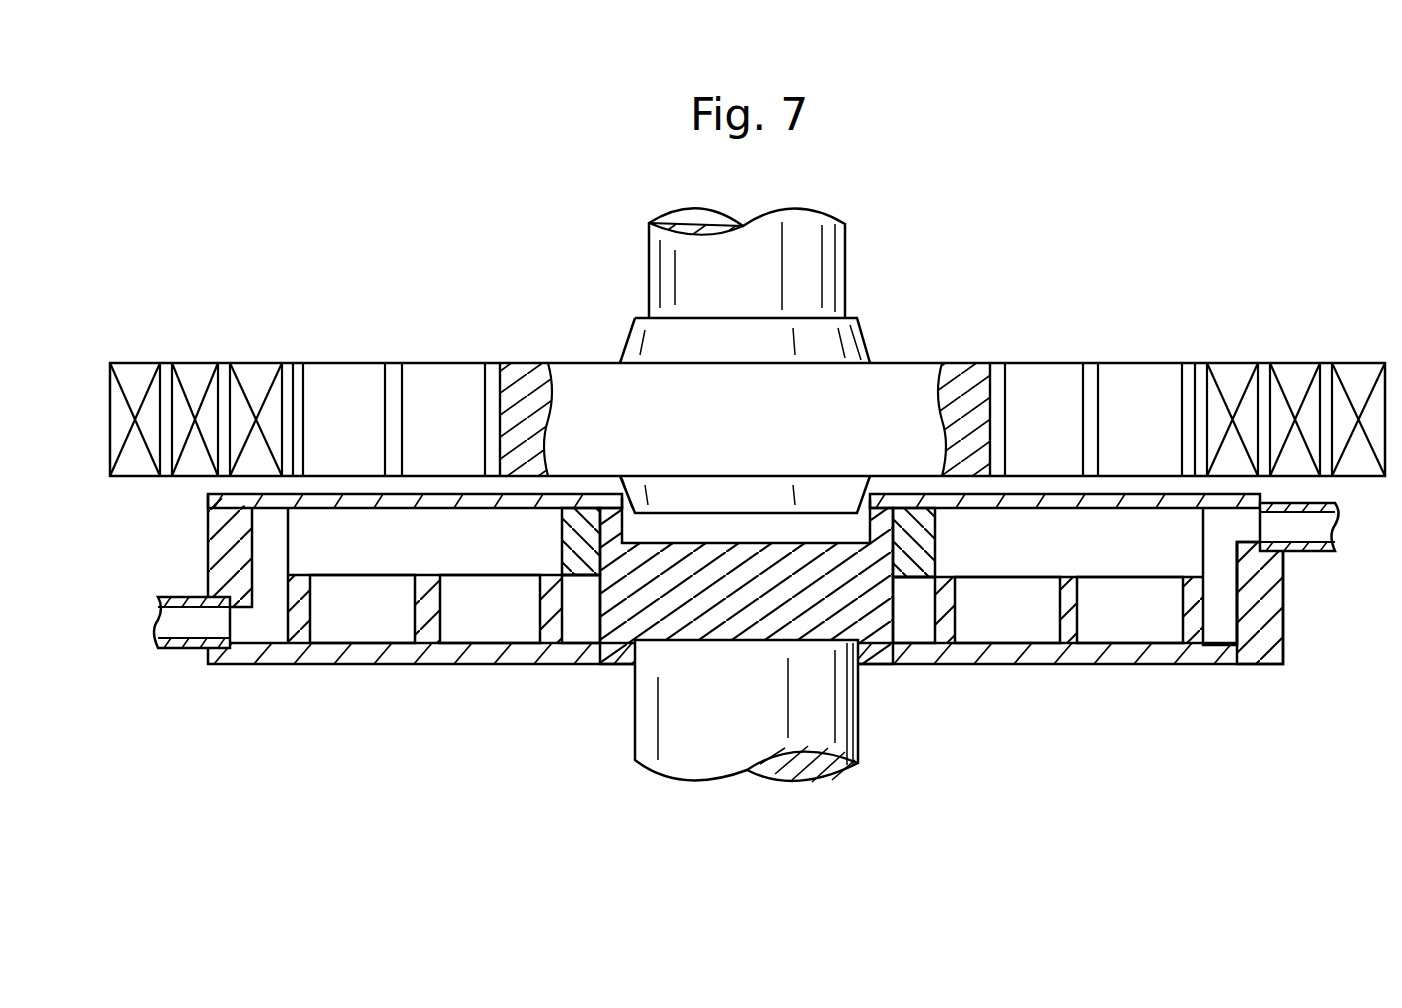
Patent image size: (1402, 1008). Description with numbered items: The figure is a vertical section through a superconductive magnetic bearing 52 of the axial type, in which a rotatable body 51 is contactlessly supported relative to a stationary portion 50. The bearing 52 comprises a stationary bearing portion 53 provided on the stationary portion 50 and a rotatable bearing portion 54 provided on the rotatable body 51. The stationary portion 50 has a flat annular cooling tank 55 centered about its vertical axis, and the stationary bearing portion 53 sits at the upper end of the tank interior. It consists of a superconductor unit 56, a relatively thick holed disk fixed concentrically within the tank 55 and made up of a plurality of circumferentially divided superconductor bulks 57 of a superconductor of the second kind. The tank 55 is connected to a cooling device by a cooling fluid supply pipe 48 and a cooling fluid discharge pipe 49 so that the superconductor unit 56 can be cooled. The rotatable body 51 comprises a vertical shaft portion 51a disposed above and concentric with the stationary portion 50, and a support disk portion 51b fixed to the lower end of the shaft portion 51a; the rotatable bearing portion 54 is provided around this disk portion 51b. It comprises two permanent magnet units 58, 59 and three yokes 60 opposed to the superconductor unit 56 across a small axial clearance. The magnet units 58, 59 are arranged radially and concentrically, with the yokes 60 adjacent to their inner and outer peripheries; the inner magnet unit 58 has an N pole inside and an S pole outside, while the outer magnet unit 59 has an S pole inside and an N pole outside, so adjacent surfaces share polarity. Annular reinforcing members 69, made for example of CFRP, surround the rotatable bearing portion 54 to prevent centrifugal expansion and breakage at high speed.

The cooling fluid supply pipe 48 is at (1300, 552).
The cooling fluid discharge pipe 49 is at (188, 648).
The stationary portion 50 is at (942, 758).
The rotatable body 51 is at (655, 250).
The vertical shaft portion 51a is at (840, 247).
The support disk portion 51b is at (905, 375).
The superconductive magnetic bearing 52 is at (196, 512).
The stationary bearing portion 53 is at (1127, 594).
The rotatable bearing portion 54 is at (442, 354).
The cooling tank 55 is at (463, 652).
The superconductor unit 56 is at (364, 565).
The superconductor bulks 57 is at (513, 565).
The inner permanent magnet unit 58 is at (1048, 380).
The outer permanent magnet unit 59 is at (1148, 380).
The yokes 60 is at (1192, 380).
The annular reinforcing members 69 is at (1350, 375).